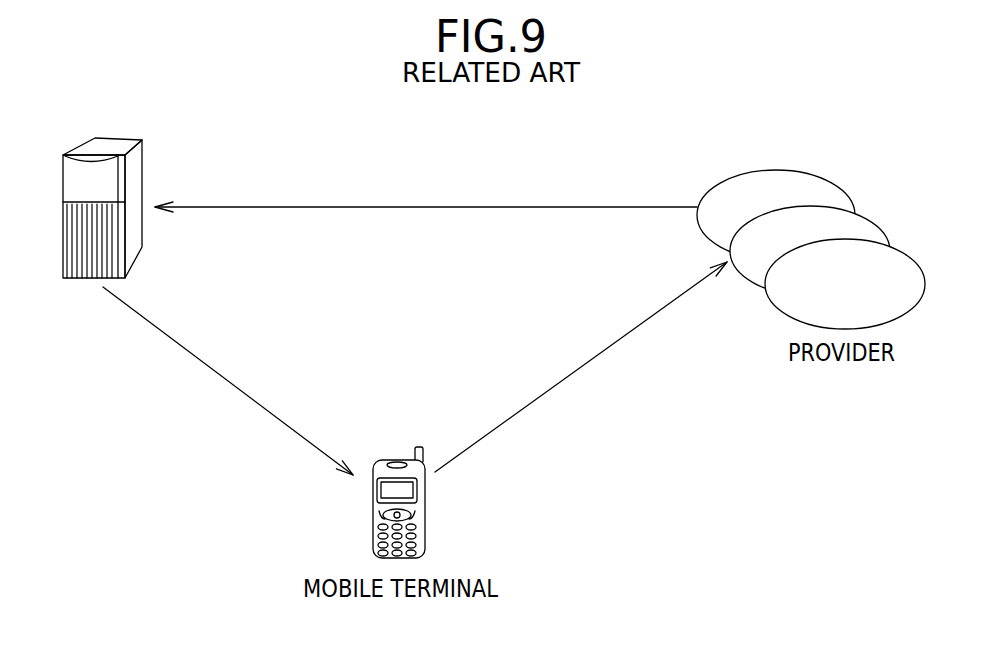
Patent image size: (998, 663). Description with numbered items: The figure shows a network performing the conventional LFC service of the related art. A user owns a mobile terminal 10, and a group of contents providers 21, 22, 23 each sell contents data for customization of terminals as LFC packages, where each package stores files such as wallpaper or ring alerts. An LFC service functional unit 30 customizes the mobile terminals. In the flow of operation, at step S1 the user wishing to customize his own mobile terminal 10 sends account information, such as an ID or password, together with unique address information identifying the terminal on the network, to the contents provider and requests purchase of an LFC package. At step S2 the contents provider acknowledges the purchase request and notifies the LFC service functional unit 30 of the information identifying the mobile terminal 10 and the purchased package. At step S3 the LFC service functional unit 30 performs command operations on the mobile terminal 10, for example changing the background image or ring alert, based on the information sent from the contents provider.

The mobile terminal 10 is at (425, 500).
The contents provider 21 is at (825, 178).
The contents provider 22 is at (877, 220).
The contents provider 23 is at (920, 265).
The LFC service functional unit 30 is at (104, 187).
The step S1 is at (560, 382).
The step S2 is at (427, 208).
The step S3 is at (250, 395).